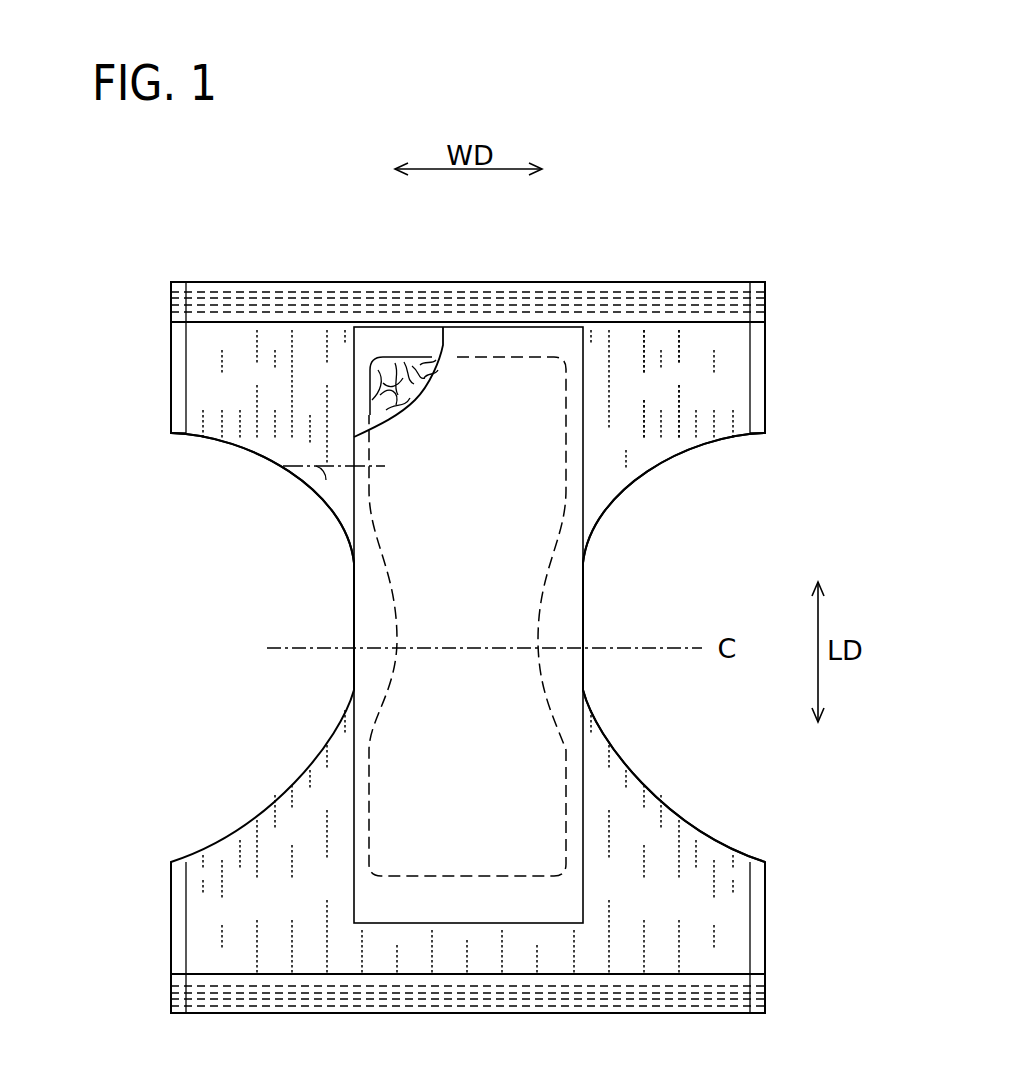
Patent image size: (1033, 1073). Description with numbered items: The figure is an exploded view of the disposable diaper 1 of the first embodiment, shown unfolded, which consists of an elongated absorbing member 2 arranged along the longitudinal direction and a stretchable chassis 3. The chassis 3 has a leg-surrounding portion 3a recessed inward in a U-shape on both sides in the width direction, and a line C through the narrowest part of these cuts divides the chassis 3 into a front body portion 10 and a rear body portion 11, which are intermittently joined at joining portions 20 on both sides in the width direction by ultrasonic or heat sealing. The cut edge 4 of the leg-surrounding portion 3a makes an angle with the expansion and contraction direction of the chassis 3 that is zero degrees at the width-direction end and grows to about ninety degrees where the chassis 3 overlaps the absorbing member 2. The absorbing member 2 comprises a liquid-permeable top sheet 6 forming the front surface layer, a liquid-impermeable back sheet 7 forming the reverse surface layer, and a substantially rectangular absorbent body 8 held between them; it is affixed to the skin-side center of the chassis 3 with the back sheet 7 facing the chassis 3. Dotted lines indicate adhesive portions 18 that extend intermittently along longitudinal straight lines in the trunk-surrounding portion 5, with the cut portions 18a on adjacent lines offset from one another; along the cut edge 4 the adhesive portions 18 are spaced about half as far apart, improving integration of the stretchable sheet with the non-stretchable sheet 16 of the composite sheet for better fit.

The disposable diaper 1 is at (199, 629).
The absorbing member 2 is at (520, 366).
The chassis 3 is at (642, 812).
The leg-surrounding portion 3a is at (244, 748).
The cut edge 4 is at (262, 455).
The trunk-surrounding portion 5 is at (195, 385).
The liquid-permeable top sheet 6 is at (386, 581).
The liquid-impermeable back sheet 7 is at (382, 345).
The absorbent body 8 is at (408, 350).
The front body portion 10 is at (243, 343).
The rear body portion 11 is at (222, 958).
The non-stretchable sheet 16 is at (712, 378).
The adhesive portion 18 is at (645, 358).
The cut portion 18a is at (683, 355).
The joining portion 20 is at (178, 338).